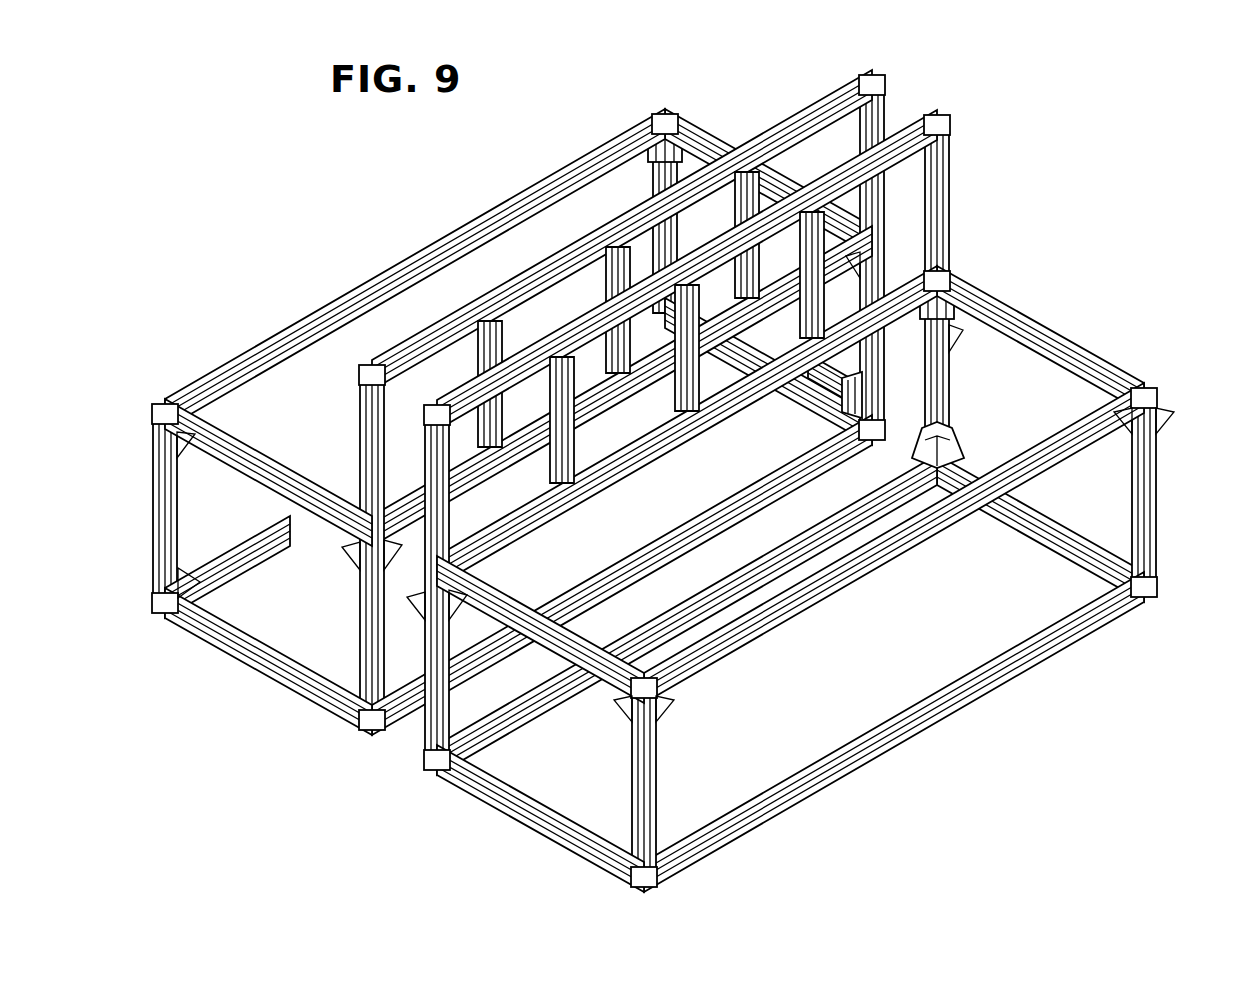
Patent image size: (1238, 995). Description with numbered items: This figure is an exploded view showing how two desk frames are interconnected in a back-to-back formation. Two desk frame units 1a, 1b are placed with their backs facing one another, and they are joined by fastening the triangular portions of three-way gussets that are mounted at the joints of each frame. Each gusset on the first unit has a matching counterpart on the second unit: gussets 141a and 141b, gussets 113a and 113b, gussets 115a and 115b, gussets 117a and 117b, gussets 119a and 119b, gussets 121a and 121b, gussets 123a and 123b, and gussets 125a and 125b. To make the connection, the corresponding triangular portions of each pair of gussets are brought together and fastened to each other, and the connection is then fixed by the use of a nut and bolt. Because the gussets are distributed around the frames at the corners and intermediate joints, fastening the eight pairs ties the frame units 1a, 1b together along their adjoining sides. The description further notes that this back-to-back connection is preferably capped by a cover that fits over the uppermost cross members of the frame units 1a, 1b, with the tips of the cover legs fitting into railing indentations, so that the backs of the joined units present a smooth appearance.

The desk frame unit 1a is at (340, 212).
The desk frame unit 1b is at (1062, 736).
The gusset 113a is at (353, 578).
The gusset 113b is at (662, 700).
The gusset 115a is at (882, 80).
The gusset 115b is at (935, 143).
The gusset 117a is at (483, 330).
The gusset 117b is at (497, 343).
The gusset 119a is at (390, 547).
The gusset 119b is at (460, 613).
The gusset 121a is at (870, 262).
The gusset 121b is at (957, 340).
The gusset 123a is at (377, 718).
The gusset 123b is at (430, 758).
The gusset 125a is at (866, 406).
The gusset 125b is at (956, 446).
The gusset 141a is at (675, 262).
The gusset 141b is at (700, 273).